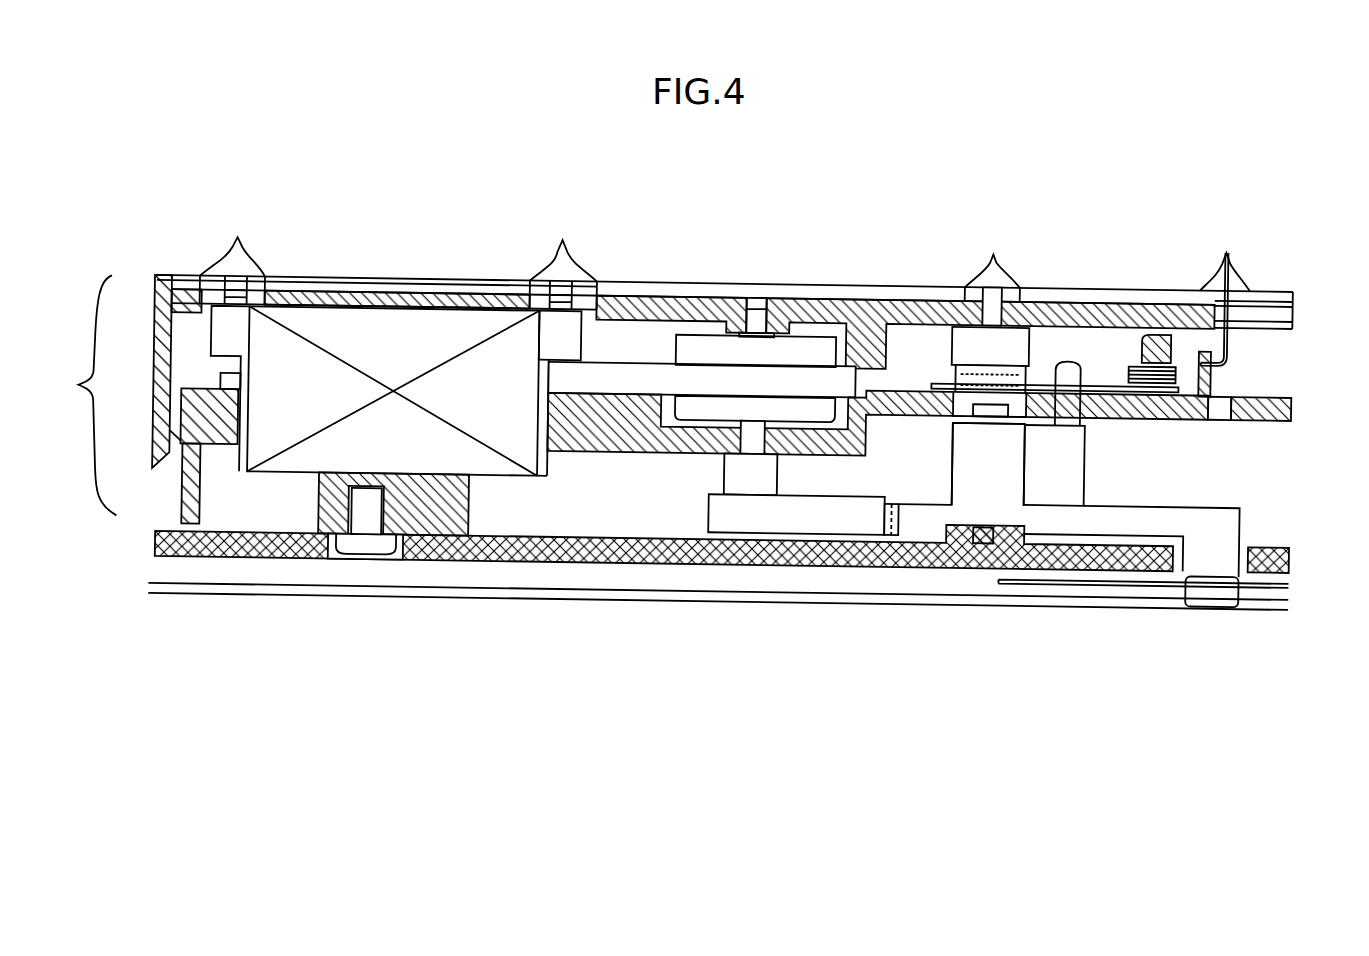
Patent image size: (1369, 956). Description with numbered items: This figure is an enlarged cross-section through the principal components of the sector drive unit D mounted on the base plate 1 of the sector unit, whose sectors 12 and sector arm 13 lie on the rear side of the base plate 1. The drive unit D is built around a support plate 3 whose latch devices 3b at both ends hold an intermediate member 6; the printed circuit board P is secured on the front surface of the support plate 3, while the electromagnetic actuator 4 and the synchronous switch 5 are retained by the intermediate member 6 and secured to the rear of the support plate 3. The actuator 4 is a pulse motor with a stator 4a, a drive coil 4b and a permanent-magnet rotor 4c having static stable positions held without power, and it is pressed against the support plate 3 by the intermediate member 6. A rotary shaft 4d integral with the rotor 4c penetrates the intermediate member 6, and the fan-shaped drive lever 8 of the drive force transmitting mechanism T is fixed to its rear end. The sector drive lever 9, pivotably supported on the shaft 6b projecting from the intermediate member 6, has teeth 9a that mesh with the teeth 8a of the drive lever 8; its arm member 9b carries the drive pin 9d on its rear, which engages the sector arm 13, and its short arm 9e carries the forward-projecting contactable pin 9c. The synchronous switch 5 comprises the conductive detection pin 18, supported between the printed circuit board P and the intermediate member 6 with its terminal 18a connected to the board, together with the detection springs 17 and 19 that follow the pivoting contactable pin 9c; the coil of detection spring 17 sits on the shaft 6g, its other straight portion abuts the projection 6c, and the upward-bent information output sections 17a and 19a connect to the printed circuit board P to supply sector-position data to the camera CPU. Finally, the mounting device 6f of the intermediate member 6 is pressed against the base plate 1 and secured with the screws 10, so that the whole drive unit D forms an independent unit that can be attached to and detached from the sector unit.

The base plate 1 is at (258, 557).
The support plate 3 is at (855, 290).
The latch device 3b is at (155, 362).
The electromagnetic actuator 4 is at (425, 202).
The stator 4a is at (630, 356).
The drive coil 4b is at (413, 316).
The rotor 4c is at (695, 324).
The rotary shaft 4d is at (760, 312).
The synchronous switch 5 is at (1150, 219).
The intermediate member 6 is at (600, 446).
The shaft 6b is at (983, 548).
The projection 6c is at (1215, 362).
The mounting device 6f is at (476, 512).
The shaft 6g is at (1176, 342).
The drive lever 8 is at (745, 525).
The teeth 8a is at (887, 540).
The sector drive lever 9 is at (1045, 458).
The teeth 9a is at (895, 537).
The arm member 9b is at (1125, 518).
The contactable pin 9c is at (1092, 346).
The drive pin 9d is at (1200, 562).
The short arm 9e is at (1087, 443).
The screw 10 is at (355, 557).
The sector 12 is at (952, 540).
The sector arm 13 is at (1137, 573).
The detection spring 17 is at (1043, 372).
The information output section 17a is at (1226, 235).
The detection pin 18 is at (1033, 335).
The terminal 18a is at (993, 241).
The detection spring 19 is at (1055, 321).
The information output section 19a is at (1285, 292).
The sector drive unit D is at (80, 394).
The printed circuit board P is at (913, 280).
The drive force transmitting mechanism T is at (974, 476).